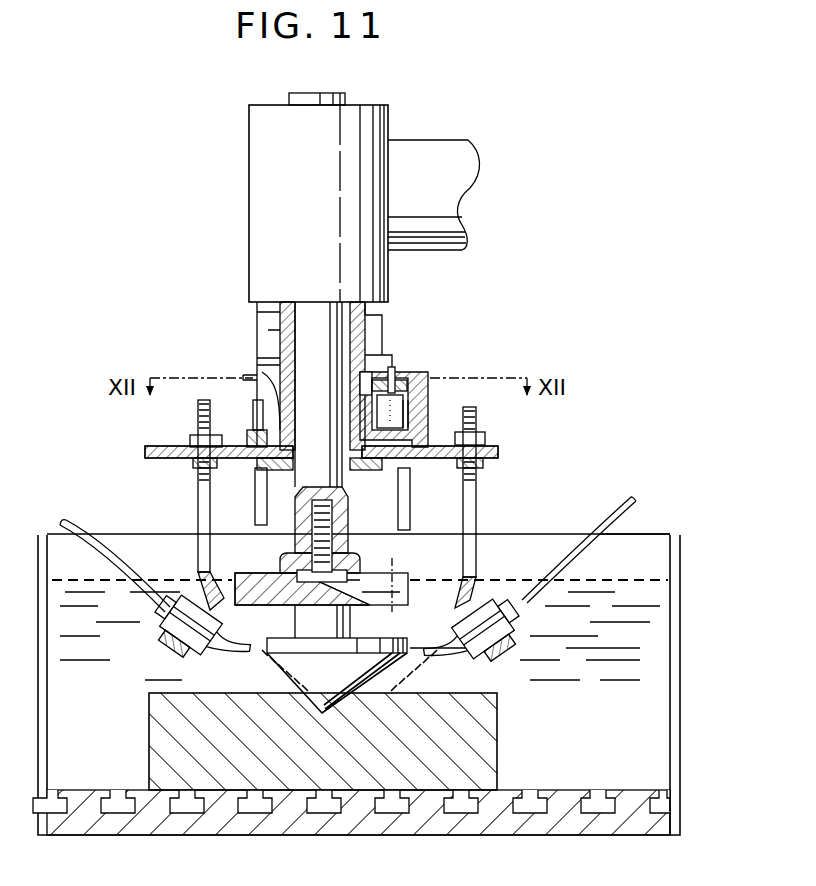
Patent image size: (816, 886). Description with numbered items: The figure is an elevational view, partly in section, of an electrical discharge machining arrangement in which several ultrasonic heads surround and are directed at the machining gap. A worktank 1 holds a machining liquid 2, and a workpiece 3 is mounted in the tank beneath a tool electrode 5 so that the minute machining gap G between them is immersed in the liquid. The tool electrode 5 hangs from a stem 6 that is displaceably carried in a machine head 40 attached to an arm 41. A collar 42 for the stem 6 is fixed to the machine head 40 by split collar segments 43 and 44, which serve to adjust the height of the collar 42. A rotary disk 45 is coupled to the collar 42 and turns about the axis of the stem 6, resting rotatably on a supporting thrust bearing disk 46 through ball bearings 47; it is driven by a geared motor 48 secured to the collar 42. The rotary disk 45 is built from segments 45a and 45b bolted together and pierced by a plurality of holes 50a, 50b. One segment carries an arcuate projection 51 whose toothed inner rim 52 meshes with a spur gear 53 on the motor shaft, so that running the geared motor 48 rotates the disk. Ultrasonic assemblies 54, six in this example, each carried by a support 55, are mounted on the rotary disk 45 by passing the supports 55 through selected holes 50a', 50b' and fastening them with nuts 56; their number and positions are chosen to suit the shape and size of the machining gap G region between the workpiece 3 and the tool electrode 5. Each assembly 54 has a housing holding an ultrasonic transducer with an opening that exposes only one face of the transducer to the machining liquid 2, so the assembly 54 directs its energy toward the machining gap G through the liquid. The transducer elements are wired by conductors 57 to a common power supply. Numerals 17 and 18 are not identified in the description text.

The worktank 1 is at (646, 532).
The machining liquid 2 is at (655, 645).
The workpiece 3 is at (497, 728).
The tool electrode 5 is at (300, 701).
The stem 6 is at (333, 302).
The nozzle 17 is at (170, 645).
The hose 18 is at (172, 614).
The machine head 40 is at (258, 177).
The arm 41 is at (462, 187).
The collar 42 is at (283, 400).
The split collar segment 43 is at (280, 330).
The split collar segment 44 is at (393, 312).
The rotary disk 45 is at (143, 452).
The disk segment 45a is at (161, 447).
The disk segment 45b is at (498, 451).
The supporting thrust bearing disk 46 is at (255, 513).
The ball bearings 47 is at (270, 484).
The geared motor 48 is at (426, 386).
The holes 50a is at (187, 416).
The selected hole 50a' is at (176, 479).
The holes 50b is at (437, 492).
The selected hole 50b' is at (508, 477).
The arcuate projection 51 is at (422, 412).
The toothed inner rim 52 is at (368, 392).
The spur gear 53 is at (400, 395).
The ultrasonic assembly 54 is at (494, 605).
The support 55 is at (470, 579).
The nut 56 is at (482, 437).
The conductors 57 is at (595, 540).
The machining gap G is at (345, 698).